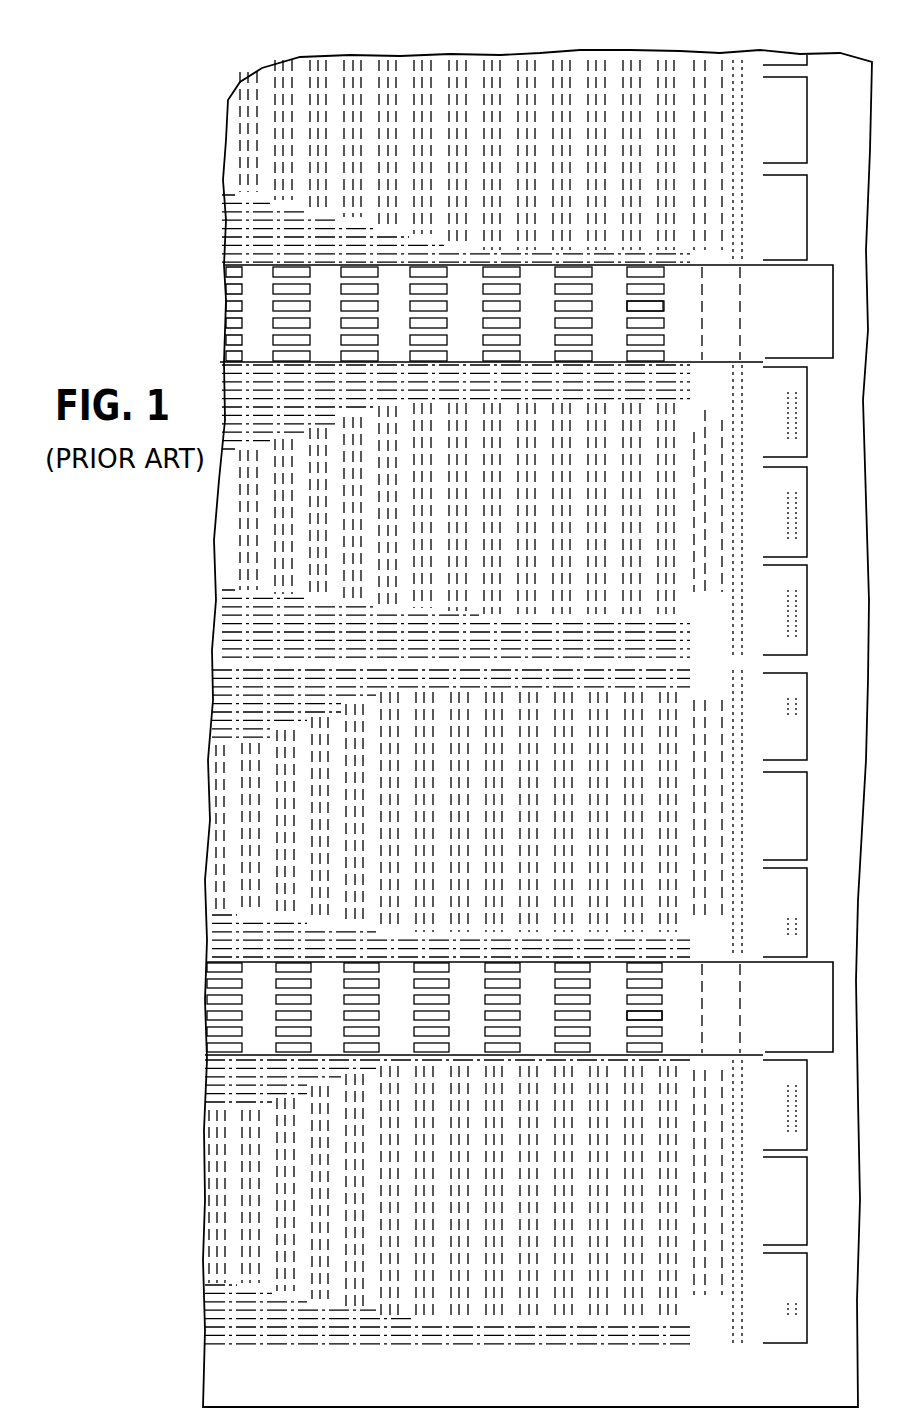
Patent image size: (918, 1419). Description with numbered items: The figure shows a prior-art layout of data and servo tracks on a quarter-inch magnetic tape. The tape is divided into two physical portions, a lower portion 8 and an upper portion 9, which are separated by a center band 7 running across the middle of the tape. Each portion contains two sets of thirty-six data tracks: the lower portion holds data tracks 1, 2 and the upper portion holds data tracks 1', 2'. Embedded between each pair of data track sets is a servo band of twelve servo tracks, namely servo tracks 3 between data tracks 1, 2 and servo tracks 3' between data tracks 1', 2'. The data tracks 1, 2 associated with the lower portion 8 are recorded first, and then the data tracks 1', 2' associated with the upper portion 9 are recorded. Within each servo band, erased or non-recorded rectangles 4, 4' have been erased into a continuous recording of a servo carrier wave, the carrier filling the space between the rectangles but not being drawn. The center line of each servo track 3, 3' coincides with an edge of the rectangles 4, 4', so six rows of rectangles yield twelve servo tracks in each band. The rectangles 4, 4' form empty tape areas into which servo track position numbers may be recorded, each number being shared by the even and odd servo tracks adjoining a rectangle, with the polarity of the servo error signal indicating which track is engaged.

The data tracks 1 is at (473, 1202).
The data tracks 1' is at (482, 511).
The data tracks 2 is at (477, 813).
The data tracks 2' is at (482, 161).
The servo tracks 3 is at (519, 1008).
The servo tracks 3' is at (526, 313).
The erased or non-recorded rectangles 4 is at (659, 1006).
The erased or non-recorded rectangles 4' is at (660, 317).
The center band 7 is at (559, 684).
The lower portion 8 is at (530, 1385).
The upper portion 9 is at (571, 52).